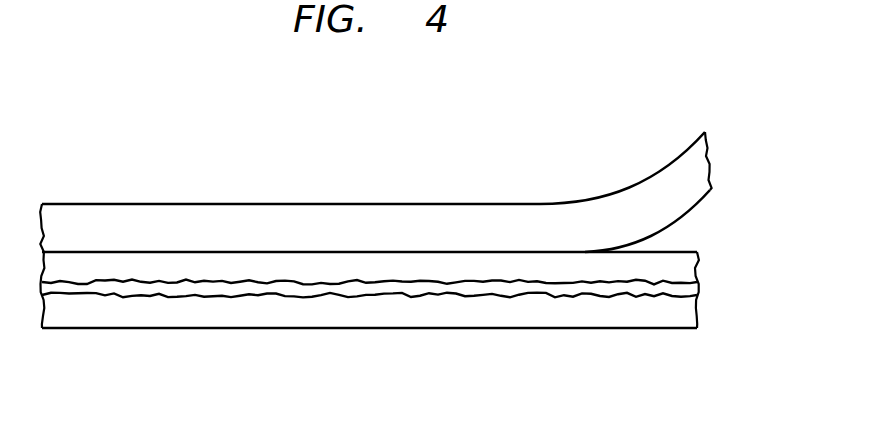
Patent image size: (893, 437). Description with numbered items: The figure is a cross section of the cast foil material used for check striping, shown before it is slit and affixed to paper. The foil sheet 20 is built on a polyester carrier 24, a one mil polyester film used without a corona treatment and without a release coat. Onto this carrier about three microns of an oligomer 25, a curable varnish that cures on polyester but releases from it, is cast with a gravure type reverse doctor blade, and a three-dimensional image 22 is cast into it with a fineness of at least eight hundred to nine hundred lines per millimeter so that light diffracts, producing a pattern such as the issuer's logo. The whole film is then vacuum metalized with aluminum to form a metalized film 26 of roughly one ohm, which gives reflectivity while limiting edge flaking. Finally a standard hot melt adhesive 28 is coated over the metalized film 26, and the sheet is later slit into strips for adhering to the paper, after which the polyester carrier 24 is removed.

The foil sheet 20 is at (211, 200).
The polyester carrier 24 is at (498, 226).
The oligomer 25 is at (657, 266).
The three-dimensional image 22 is at (662, 287).
The metalized film 26 is at (650, 306).
The hot melt adhesive 28 is at (557, 315).